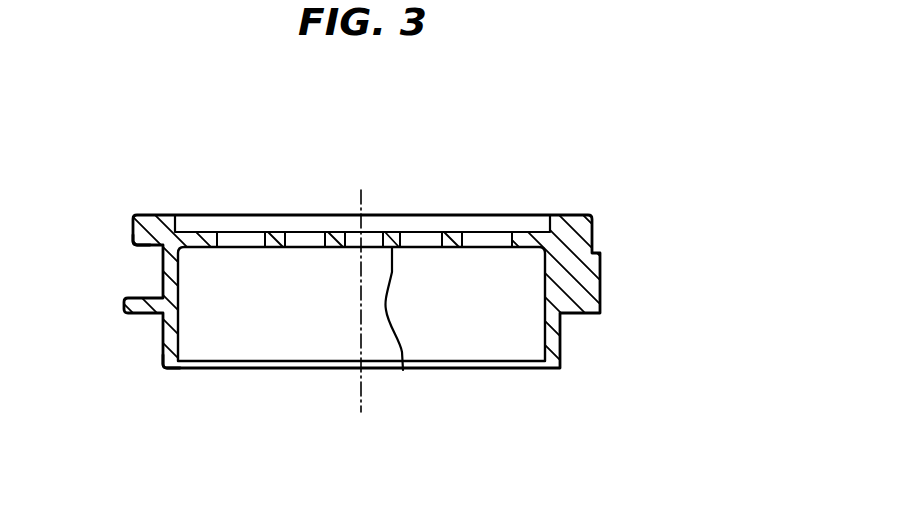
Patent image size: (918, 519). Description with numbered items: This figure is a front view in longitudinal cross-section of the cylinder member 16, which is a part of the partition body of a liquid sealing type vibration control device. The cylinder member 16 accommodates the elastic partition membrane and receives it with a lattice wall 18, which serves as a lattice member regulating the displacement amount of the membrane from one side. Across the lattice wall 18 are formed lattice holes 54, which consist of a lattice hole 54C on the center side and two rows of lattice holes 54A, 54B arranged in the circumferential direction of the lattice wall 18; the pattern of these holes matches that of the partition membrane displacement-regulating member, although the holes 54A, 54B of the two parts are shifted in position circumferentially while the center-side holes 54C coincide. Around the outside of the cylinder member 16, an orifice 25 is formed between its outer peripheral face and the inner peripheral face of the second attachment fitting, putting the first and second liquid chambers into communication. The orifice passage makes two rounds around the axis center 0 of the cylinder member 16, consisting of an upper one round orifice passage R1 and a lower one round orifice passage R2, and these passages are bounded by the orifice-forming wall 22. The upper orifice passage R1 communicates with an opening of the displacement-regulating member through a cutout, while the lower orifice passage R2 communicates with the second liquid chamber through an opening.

The orifice 25 is at (352, 314).
The upper one round orifice passage R1 is at (137, 261).
The lower one round orifice passage R2 is at (150, 357).
The orifice-forming wall 22 is at (168, 292).
The cylinder member 16 is at (602, 306).
The lattice holes 54 is at (376, 184).
The lattice hole 54A is at (304, 233).
The lattice hole 54B is at (240, 233).
The lattice hole 54C is at (365, 233).
The lattice wall 18 is at (404, 335).
The axis center 0 is at (357, 325).